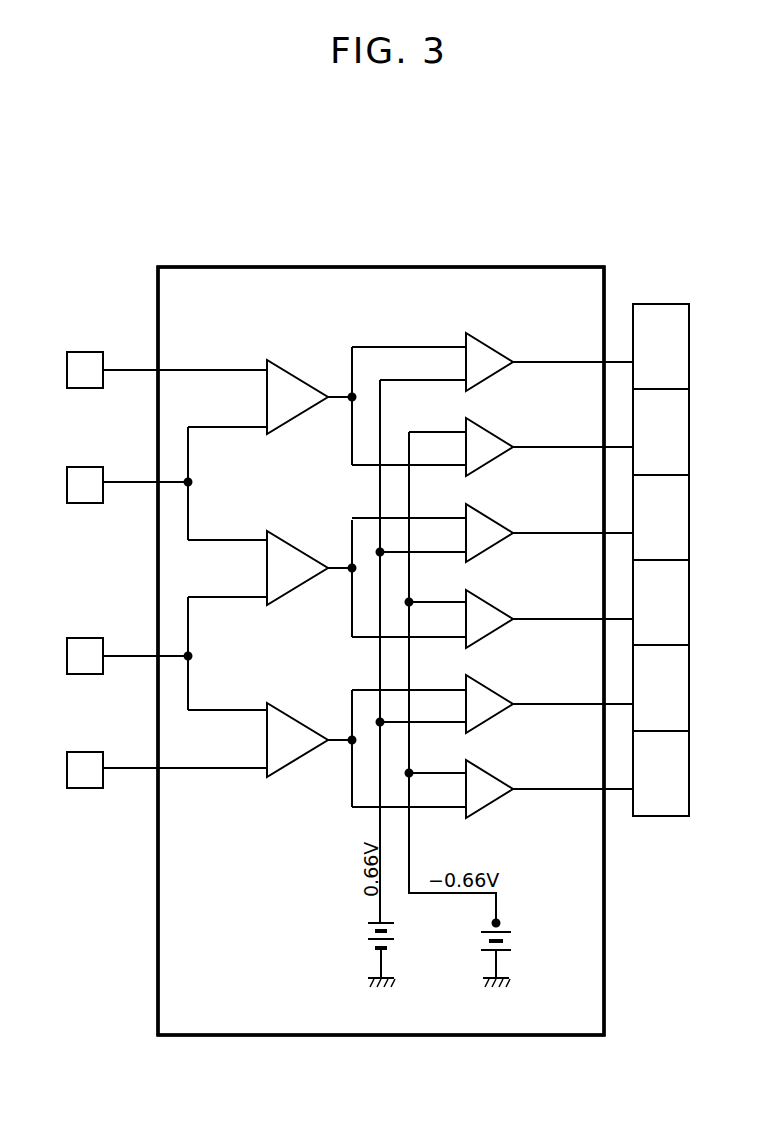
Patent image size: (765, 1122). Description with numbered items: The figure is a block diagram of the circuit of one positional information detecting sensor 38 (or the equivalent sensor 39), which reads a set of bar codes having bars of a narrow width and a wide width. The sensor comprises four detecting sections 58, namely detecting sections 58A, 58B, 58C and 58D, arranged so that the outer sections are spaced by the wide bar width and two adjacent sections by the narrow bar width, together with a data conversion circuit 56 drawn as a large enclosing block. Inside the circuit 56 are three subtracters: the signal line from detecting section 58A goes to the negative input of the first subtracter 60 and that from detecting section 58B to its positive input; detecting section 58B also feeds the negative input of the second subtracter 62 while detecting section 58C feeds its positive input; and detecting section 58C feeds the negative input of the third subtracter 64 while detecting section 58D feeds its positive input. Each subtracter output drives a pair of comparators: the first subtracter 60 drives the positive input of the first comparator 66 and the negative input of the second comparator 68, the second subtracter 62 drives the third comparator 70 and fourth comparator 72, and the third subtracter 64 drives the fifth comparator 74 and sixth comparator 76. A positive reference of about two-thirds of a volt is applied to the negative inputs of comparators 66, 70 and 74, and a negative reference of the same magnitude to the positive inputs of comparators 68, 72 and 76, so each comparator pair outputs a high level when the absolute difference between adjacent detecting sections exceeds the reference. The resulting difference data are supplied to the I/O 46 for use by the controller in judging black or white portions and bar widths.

The positional information detecting sensor 38 is at (305, 256).
The positional information detecting sensor 39 is at (381, 615).
The data conversion circuit 56 is at (448, 265).
The detecting sections 58 is at (162, 498).
The detecting section 58A is at (90, 350).
The detecting section 58B is at (89, 466).
The detecting section 58C is at (89, 638).
The detecting section 58D is at (89, 752).
The first subtracter 60 is at (303, 360).
The second subtracter 62 is at (307, 532).
The third subtracter 64 is at (307, 704).
The first comparator 66 is at (500, 350).
The second comparator 68 is at (500, 435).
The third comparator 70 is at (500, 521).
The fourth comparator 72 is at (500, 607).
The fifth comparator 74 is at (500, 692).
The sixth comparator 76 is at (500, 777).
The I/O 46 is at (657, 303).